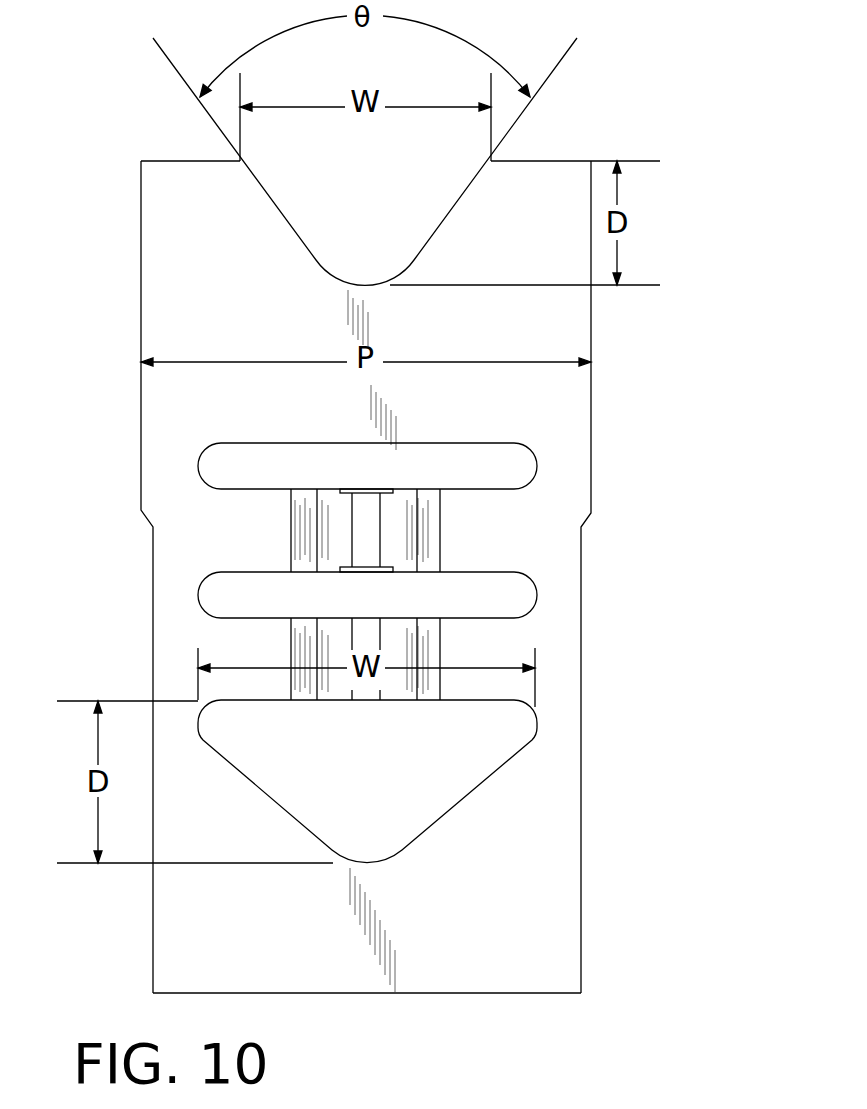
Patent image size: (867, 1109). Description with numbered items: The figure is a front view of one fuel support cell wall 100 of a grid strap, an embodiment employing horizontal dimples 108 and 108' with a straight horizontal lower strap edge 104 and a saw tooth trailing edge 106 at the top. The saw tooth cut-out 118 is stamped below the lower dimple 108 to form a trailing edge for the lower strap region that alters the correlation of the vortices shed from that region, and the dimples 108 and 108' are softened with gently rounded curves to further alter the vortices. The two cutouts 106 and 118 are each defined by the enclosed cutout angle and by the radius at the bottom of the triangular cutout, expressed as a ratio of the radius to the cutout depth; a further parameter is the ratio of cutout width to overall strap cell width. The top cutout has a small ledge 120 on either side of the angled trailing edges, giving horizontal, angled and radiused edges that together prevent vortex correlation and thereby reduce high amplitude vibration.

The substrate body 100 is at (437, 925).
The lower strap edge 104 is at (448, 993).
The saw tooth trailing edge 106 is at (423, 257).
The horizontal dimple 108 is at (431, 636).
The horizontal dimple 108' is at (438, 507).
The saw tooth cut-out 118 is at (468, 802).
The ledge 120 is at (187, 161).